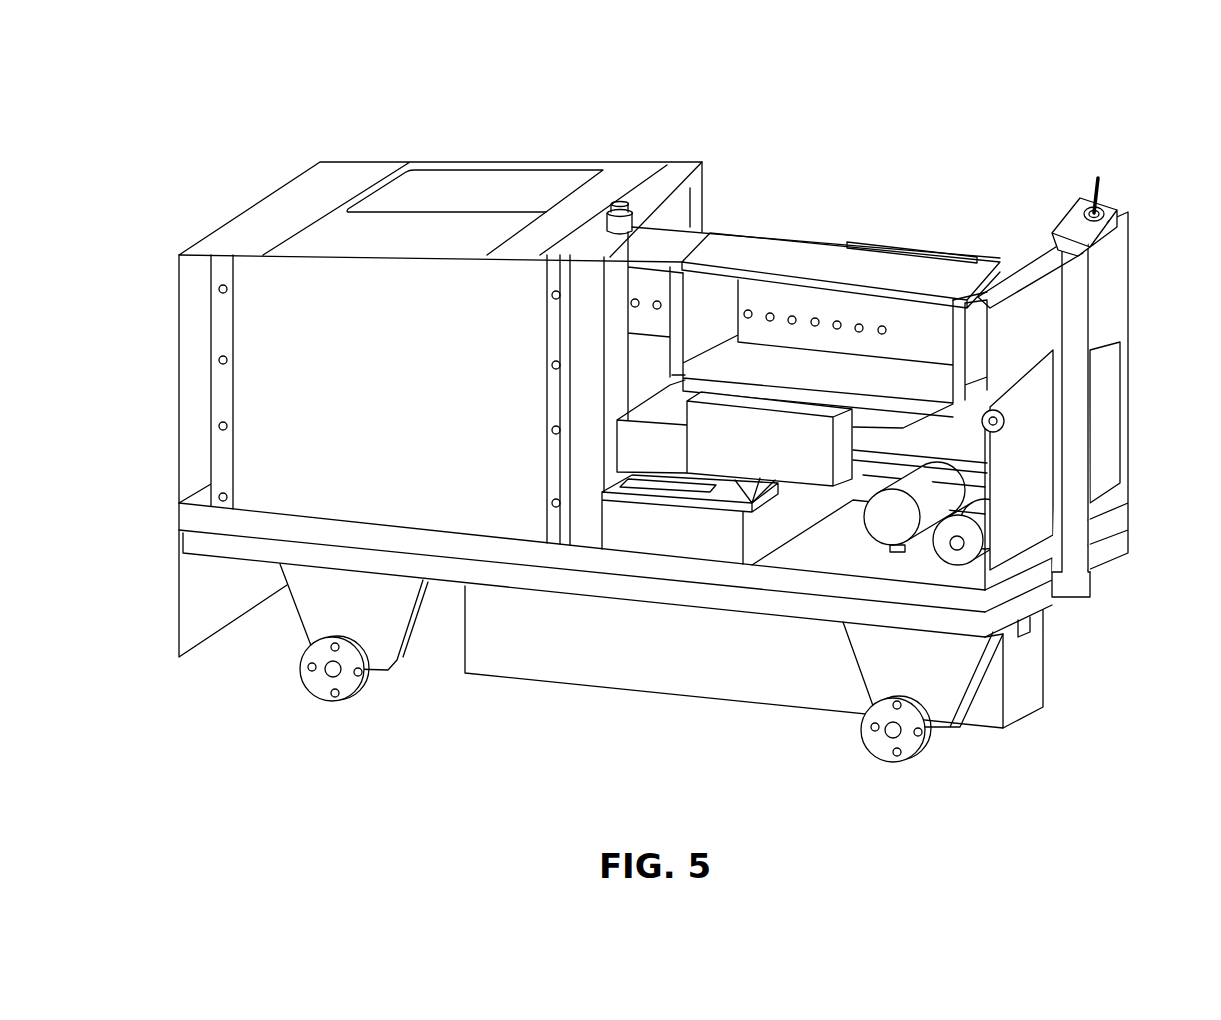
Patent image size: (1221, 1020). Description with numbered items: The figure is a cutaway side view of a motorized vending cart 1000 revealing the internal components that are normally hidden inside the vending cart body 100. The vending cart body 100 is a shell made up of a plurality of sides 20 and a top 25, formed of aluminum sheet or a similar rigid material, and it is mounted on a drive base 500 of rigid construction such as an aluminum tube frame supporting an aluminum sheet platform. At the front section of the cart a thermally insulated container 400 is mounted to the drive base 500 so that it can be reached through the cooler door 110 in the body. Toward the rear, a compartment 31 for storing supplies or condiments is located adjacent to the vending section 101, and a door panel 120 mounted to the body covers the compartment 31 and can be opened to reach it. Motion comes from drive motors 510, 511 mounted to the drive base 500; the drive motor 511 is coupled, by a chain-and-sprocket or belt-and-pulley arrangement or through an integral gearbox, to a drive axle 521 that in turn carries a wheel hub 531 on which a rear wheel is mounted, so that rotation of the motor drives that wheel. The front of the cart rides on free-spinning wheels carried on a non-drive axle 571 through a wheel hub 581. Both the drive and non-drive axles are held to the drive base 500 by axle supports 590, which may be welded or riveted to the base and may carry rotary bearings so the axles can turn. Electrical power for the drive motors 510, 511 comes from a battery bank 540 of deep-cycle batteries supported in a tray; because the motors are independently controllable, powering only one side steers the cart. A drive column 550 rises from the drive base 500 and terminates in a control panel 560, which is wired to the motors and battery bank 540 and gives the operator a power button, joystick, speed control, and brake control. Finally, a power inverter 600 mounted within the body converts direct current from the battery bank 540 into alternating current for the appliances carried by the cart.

The motorized vending cart 1000 is at (651, 446).
The top 25 is at (347, 170).
The cooler door 110 is at (483, 160).
The vending cart body 100 is at (648, 160).
The compartment 31 is at (755, 290).
The door panel 120 is at (808, 255).
The vending section 101 is at (1033, 250).
The control panel 560 is at (1080, 193).
The sides 20 is at (1122, 273).
The drive column 550 is at (1083, 303).
The thermally insulated container 400 is at (263, 375).
The axle supports 590 is at (297, 620).
The wheel hub 581 is at (307, 687).
The non-drive axle 571 is at (340, 677).
The drive base 500 is at (512, 590).
The power inverter 600 is at (717, 473).
The drive motor 510 is at (857, 527).
The drive motor 511 is at (945, 555).
The drive axle 521 is at (883, 737).
The wheel hub 531 is at (922, 753).
The battery bank 540 is at (1035, 650).